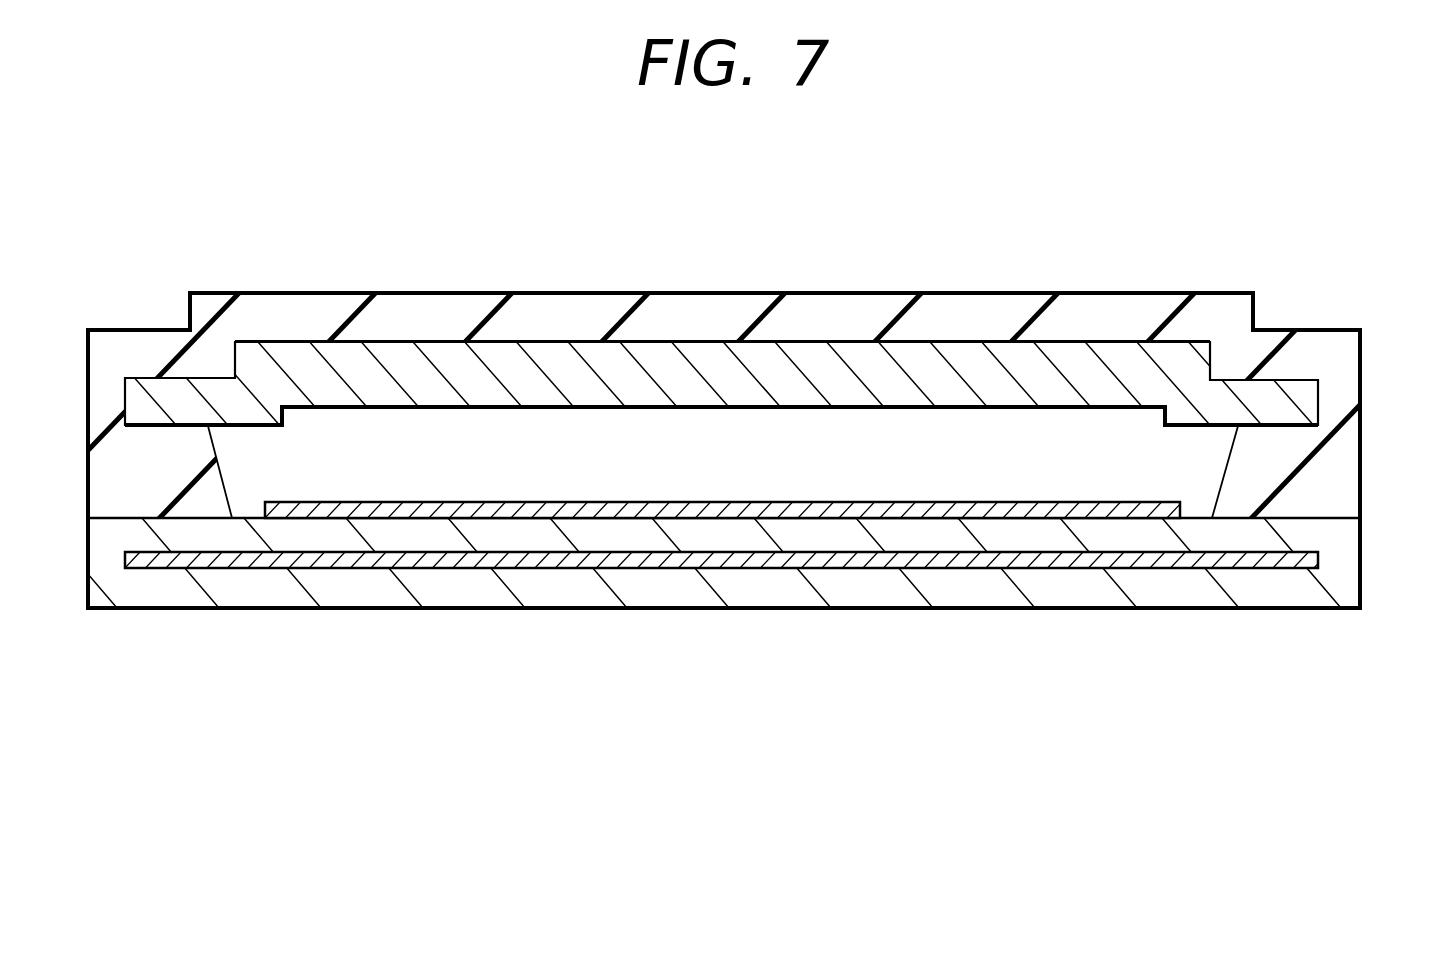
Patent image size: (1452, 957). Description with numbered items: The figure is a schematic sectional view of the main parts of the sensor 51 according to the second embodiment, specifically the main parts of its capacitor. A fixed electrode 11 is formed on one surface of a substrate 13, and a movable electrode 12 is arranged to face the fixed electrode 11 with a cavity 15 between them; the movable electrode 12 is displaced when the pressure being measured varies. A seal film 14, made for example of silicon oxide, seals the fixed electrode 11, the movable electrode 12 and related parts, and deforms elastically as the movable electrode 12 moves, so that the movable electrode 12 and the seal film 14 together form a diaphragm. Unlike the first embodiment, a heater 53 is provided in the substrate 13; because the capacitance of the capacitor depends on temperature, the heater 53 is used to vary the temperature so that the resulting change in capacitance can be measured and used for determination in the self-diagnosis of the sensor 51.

The sensor 51 is at (1189, 228).
The fixed electrode 11 is at (1165, 502).
The movable electrode 12 is at (680, 367).
The substrate 13 is at (165, 583).
The seal film 14 is at (127, 358).
The cavity 15 is at (777, 462).
The heater 53 is at (502, 573).